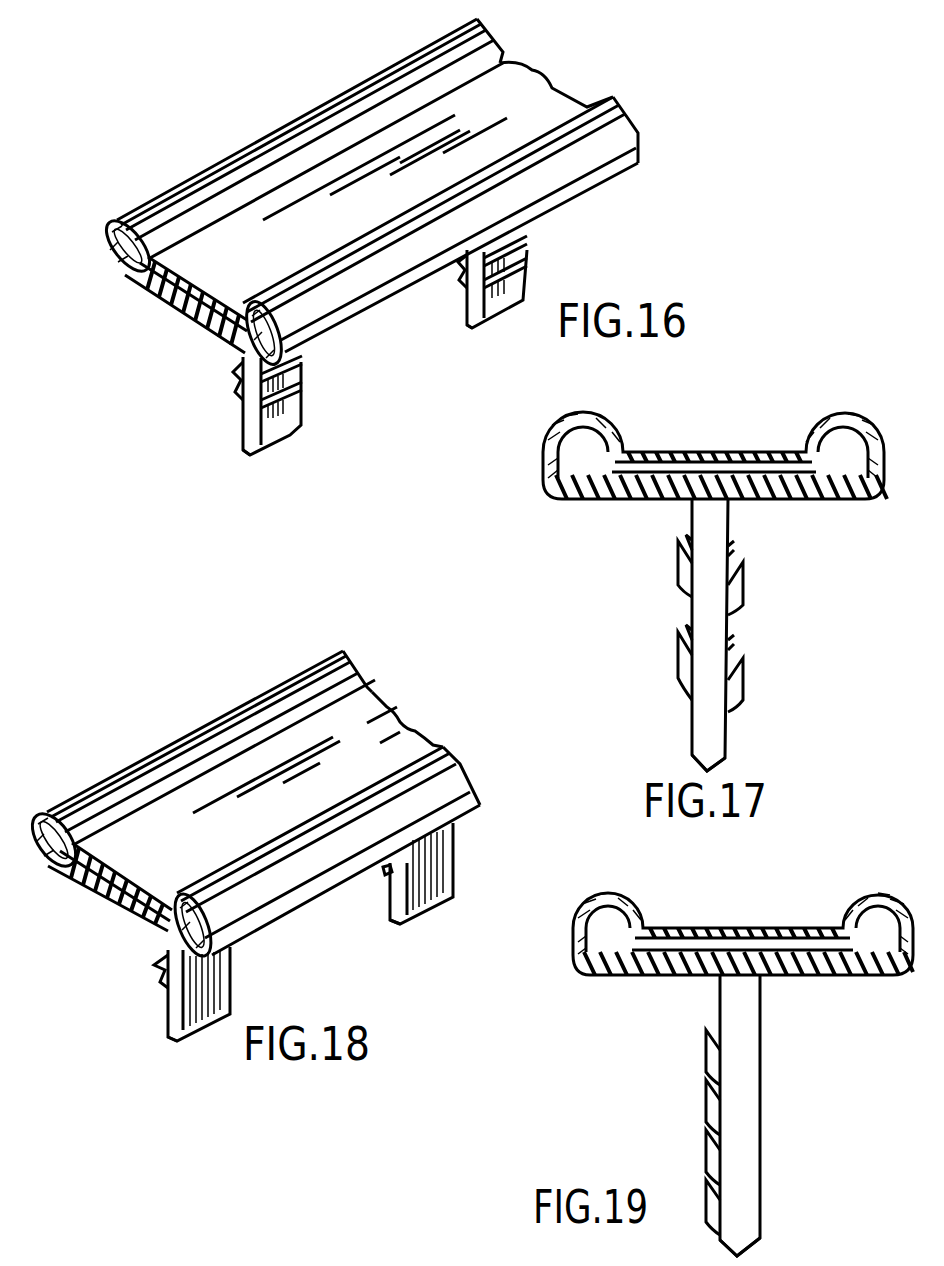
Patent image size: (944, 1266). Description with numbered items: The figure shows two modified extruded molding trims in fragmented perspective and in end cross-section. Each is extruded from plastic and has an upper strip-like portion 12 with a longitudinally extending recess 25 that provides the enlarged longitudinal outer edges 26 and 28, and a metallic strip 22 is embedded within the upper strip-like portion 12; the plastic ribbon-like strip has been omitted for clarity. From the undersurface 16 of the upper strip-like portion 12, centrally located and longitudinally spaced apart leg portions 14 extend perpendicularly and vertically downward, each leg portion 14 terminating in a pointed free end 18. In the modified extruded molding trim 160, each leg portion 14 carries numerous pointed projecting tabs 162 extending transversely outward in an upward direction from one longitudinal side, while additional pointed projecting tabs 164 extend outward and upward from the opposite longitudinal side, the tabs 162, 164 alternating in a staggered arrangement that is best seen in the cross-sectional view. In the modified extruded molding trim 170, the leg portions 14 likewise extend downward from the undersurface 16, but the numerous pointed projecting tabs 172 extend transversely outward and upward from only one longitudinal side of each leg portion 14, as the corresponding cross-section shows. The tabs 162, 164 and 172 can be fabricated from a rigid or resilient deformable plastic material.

In FIG. 16, the upper strip-like portion 12 is at (220, 240).
In FIG. 17, the upper strip-like portion 12 is at (590, 488).
In FIG. 18, the upper strip-like portion 12 is at (193, 793).
In FIG. 19, the upper strip-like portion 12 is at (618, 967).
In FIG. 16, the leg portion 14 is at (298, 420).
In FIG. 17, the leg portion 14 is at (712, 647).
In FIG. 18, the leg portion 14 is at (212, 978).
In FIG. 19, the leg portion 14 is at (740, 1120).
In FIG. 16, the undersurface 16 is at (145, 284).
In FIG. 17, the undersurface 16 is at (650, 494).
In FIG. 18, the undersurface 16 is at (105, 905).
In FIG. 19, the undersurface 16 is at (647, 973).
In FIG. 16, the pointed free end 18 is at (246, 455).
In FIG. 17, the pointed free end 18 is at (710, 768).
In FIG. 18, the pointed free end 18 is at (182, 1045).
In FIG. 19, the pointed free end 18 is at (742, 1252).
In FIG. 16, the metallic strip 22 is at (165, 310).
In FIG. 17, the metallic strip 22 is at (633, 458).
In FIG. 18, the metallic strip 22 is at (75, 870).
In FIG. 19, the metallic strip 22 is at (742, 933).
In FIG. 16, the longitudinally extending recess 25 is at (516, 105).
In FIG. 17, the longitudinally extending recess 25 is at (672, 443).
In FIG. 18, the longitudinally extending recess 25 is at (347, 716).
In FIG. 16, the enlarged longitudinal outer edge 26 is at (288, 128).
In FIG. 17, the enlarged longitudinal outer edge 26 is at (587, 412).
In FIG. 18, the enlarged longitudinal outer edge 26 is at (290, 683).
In FIG. 19, the enlarged longitudinal outer edge 26 is at (617, 897).
In FIG. 16, the enlarged longitudinal outer edge 28 is at (380, 250).
In FIG. 17, the enlarged longitudinal outer edge 28 is at (850, 423).
In FIG. 18, the enlarged longitudinal outer edge 28 is at (450, 780).
In FIG. 19, the enlarged longitudinal outer edge 28 is at (876, 923).
In FIG. 16, the modified extruded molding trim 160 is at (590, 80).
In FIG. 17, the modified extruded molding trim 160 is at (727, 437).
In FIG. 16, the pointed projecting tab 162 is at (233, 378).
In FIG. 17, the pointed projecting tab 162 is at (678, 566).
In FIG. 16, the pointed projecting tab 164 is at (305, 402).
In FIG. 17, the pointed projecting tab 164 is at (744, 573).
In FIG. 18, the modified extruded molding trim 170 is at (386, 711).
In FIG. 19, the modified extruded molding trim 170 is at (688, 910).
In FIG. 18, the pointed projecting tab 172 is at (155, 962).
In FIG. 19, the pointed projecting tab 172 is at (706, 1055).